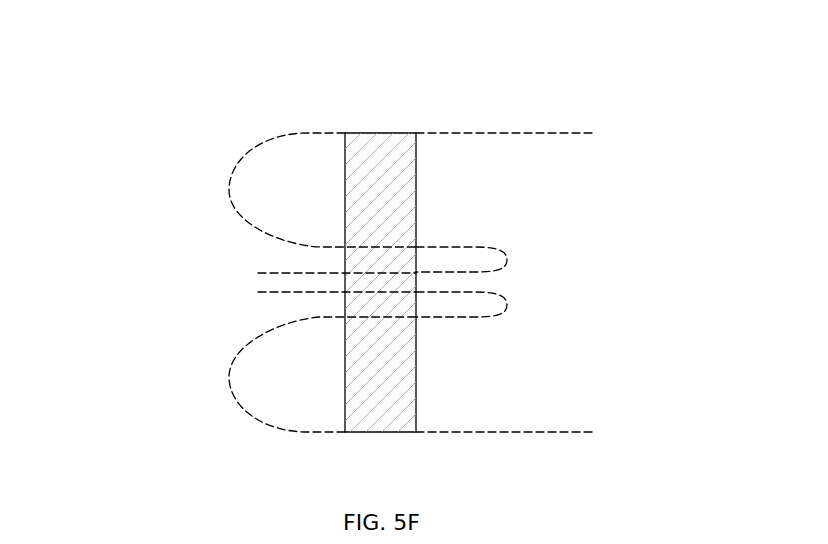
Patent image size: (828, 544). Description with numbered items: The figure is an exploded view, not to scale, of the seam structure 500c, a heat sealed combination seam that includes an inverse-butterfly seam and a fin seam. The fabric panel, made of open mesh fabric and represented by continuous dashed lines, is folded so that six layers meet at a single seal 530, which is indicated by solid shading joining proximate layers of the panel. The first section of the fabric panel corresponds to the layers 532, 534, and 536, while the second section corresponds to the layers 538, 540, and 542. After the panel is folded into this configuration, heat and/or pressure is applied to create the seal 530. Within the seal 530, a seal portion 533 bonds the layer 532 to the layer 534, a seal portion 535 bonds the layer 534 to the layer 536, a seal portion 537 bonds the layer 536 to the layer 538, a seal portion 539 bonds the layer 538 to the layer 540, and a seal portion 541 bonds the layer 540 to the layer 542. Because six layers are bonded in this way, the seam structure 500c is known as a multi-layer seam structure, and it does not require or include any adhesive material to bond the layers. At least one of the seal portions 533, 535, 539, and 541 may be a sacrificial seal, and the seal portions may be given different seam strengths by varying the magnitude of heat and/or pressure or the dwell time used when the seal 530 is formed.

The seam structure 500c is at (135, 102).
The seal 530 is at (381, 131).
The layer 532 is at (416, 134).
The seal portion 533 is at (403, 206).
The layer 534 is at (416, 247).
The seal portion 535 is at (345, 263).
The layer 536 is at (345, 273).
The seal portion 537 is at (416, 283).
The layer 538 is at (345, 292).
The seal portion 539 is at (346, 305).
The layer 540 is at (416, 318).
The seal portion 541 is at (400, 387).
The layer 542 is at (418, 432).